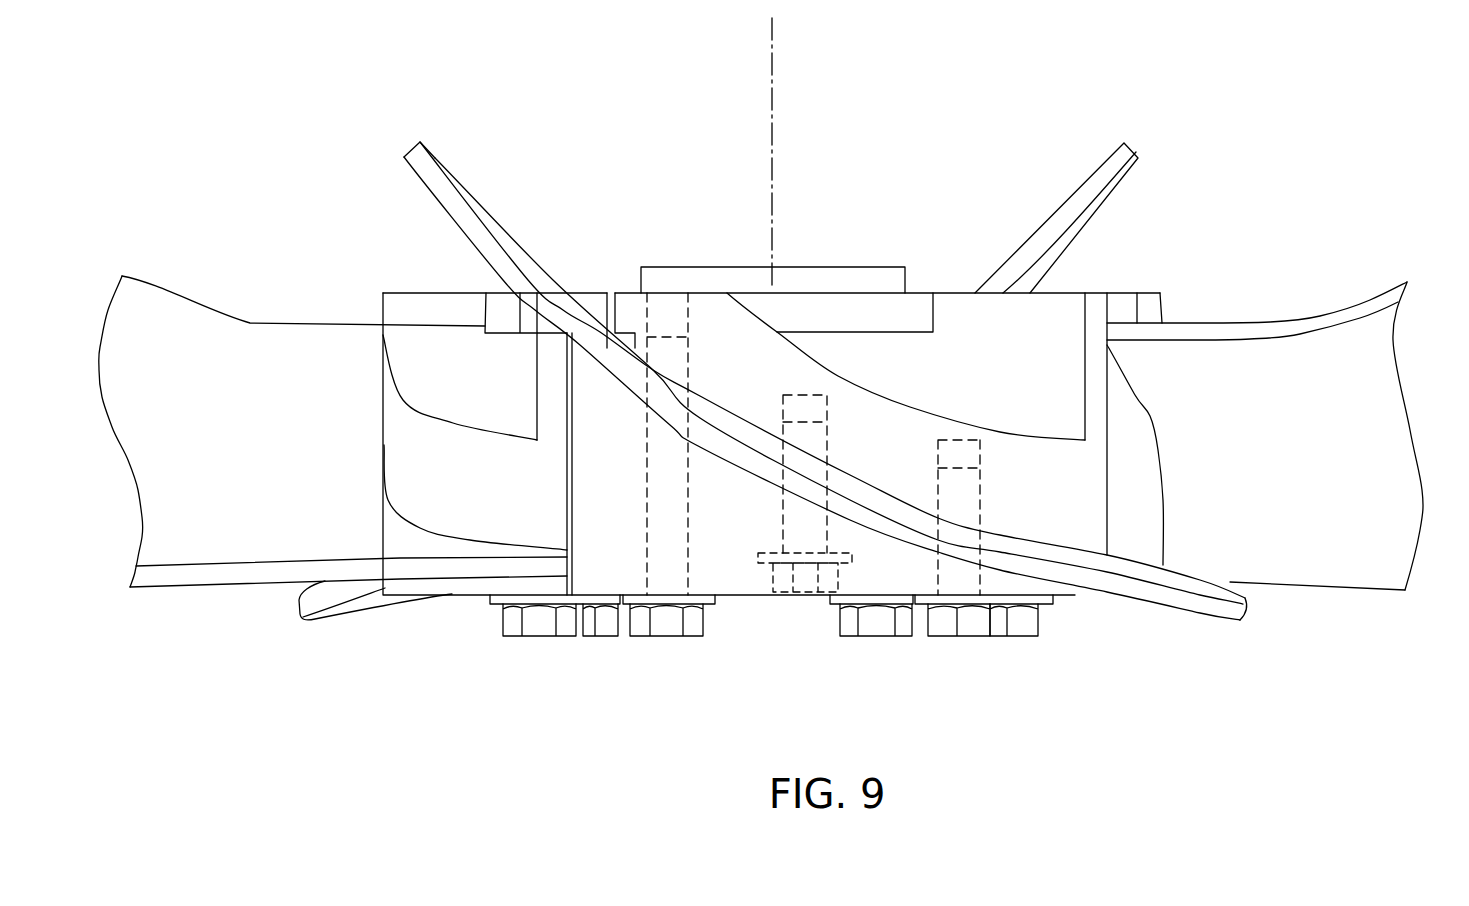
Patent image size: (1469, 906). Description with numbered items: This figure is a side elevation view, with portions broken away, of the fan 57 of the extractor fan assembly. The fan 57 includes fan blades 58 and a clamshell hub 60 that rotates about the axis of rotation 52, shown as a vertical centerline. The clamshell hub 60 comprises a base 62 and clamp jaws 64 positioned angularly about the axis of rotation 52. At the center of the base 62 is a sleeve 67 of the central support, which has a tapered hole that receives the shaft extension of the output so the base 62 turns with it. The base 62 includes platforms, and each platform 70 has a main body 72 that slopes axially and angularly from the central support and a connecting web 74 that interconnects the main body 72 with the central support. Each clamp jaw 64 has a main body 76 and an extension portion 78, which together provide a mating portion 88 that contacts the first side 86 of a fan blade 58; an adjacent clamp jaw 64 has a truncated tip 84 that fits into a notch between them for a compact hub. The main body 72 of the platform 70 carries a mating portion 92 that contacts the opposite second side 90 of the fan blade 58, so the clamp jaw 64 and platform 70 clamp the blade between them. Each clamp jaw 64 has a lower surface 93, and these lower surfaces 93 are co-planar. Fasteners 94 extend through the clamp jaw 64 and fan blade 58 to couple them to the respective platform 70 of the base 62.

The axis of rotation 52 is at (774, 92).
The fan 57 is at (233, 86).
The fan blades 58 is at (440, 156).
The clamshell hub 60 is at (1209, 248).
The base 62 is at (1109, 254).
The clamp jaws 64 is at (1162, 485).
The sleeve 67 is at (838, 283).
The platform 70 is at (876, 380).
The main body 72 is at (398, 437).
The connecting web 74 is at (550, 366).
The main body 76 is at (900, 580).
The extension portion 78 is at (581, 390).
The truncated tip 84 is at (576, 584).
The first side 86 is at (1358, 353).
The mating portion 88 is at (718, 455).
The second side 90 is at (302, 347).
The mating portion 92 is at (440, 527).
The lower surface 93 is at (480, 605).
The fasteners 94 is at (662, 622).